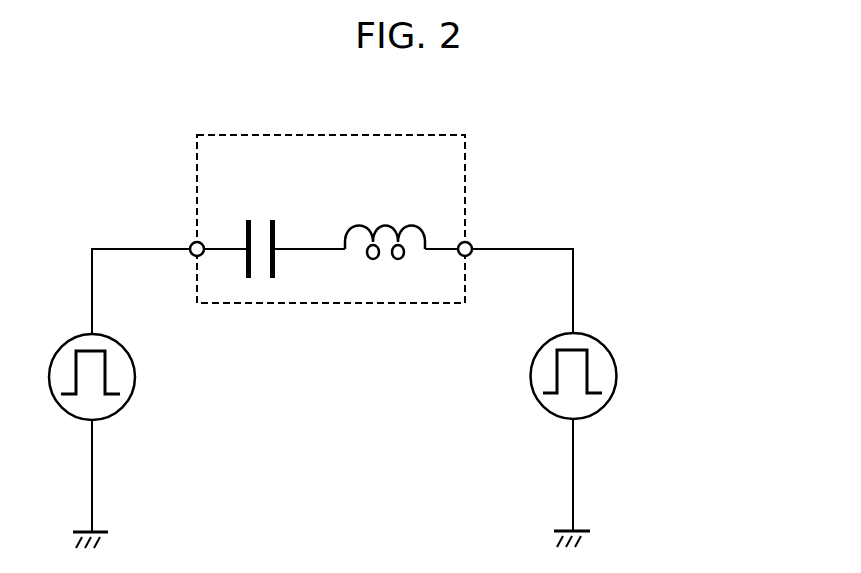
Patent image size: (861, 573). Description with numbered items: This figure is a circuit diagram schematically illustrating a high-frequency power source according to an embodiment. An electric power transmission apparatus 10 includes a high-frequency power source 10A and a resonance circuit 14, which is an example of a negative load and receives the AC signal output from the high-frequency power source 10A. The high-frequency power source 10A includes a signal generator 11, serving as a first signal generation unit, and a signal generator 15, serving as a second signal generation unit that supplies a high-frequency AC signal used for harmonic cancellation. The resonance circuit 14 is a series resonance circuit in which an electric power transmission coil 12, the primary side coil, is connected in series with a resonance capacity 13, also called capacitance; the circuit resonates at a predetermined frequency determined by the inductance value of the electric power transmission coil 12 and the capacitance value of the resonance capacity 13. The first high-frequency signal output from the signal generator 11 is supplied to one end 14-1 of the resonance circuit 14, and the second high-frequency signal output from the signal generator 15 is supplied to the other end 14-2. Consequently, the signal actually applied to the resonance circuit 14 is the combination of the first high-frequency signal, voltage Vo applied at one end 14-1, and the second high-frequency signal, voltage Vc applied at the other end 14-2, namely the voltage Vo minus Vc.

The electric power transmission apparatus 10 is at (553, 137).
The high-frequency power source 10A is at (189, 452).
The signal generator 11 is at (68, 342).
The electric power transmission coil 12 is at (388, 228).
The resonance capacity 13 is at (258, 216).
The resonance circuit 14 is at (400, 135).
The one end 14-1 is at (189, 243).
The other end 14-2 is at (473, 243).
The signal generator 15 is at (597, 341).